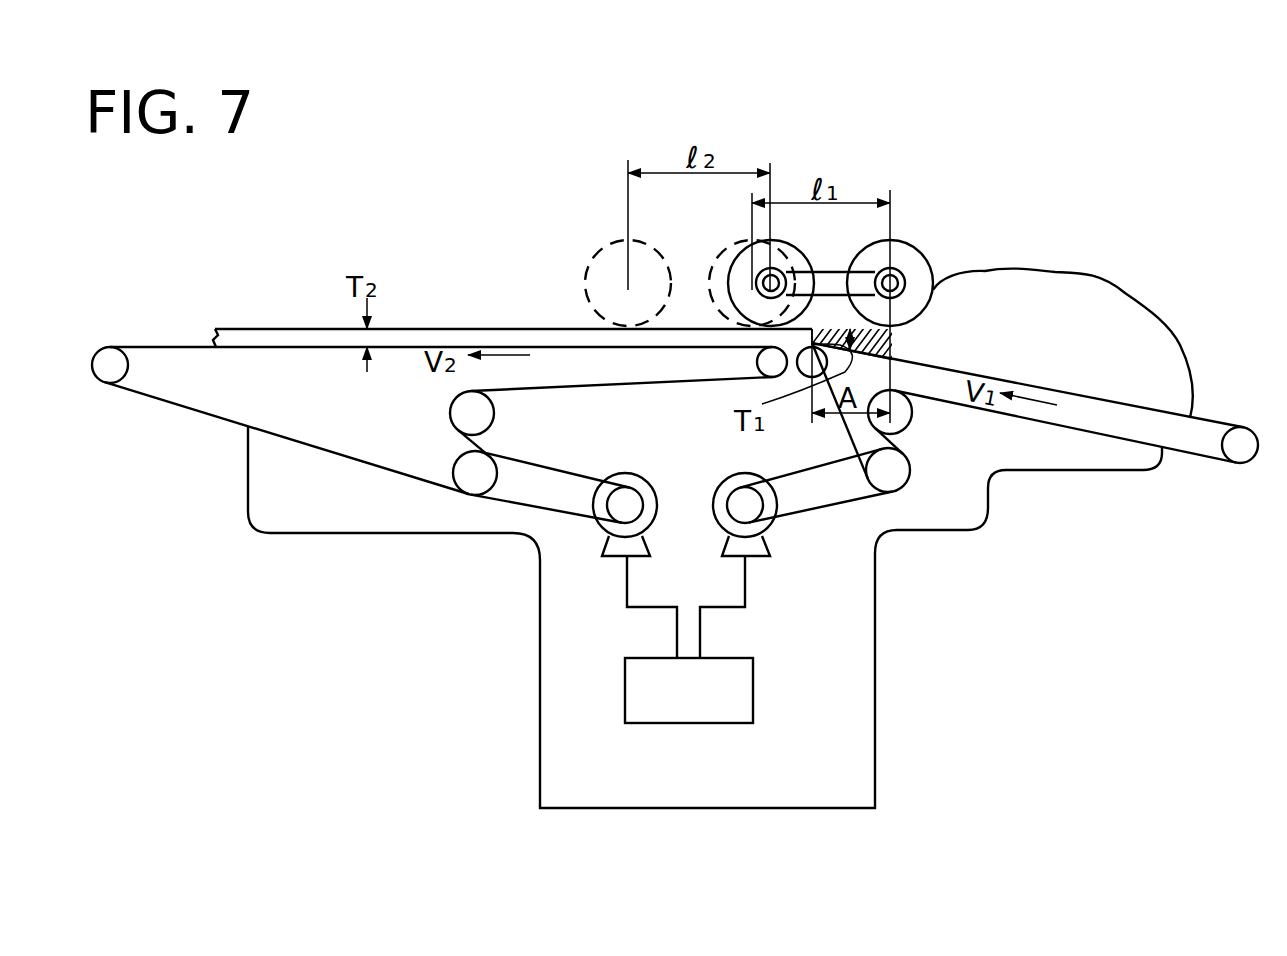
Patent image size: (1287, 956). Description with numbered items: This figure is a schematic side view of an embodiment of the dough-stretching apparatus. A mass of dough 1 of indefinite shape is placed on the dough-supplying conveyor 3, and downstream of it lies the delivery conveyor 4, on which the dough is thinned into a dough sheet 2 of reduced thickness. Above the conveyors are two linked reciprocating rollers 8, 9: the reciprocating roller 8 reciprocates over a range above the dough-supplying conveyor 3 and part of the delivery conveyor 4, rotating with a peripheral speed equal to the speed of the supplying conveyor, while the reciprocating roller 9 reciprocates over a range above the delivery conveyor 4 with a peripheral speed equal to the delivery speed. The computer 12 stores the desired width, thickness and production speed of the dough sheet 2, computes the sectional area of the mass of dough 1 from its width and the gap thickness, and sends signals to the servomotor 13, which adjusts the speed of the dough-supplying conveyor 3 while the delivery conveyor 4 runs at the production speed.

The mass of dough 1 is at (1073, 272).
The dough sheet 2 is at (242, 330).
The dough-supplying conveyor 3 is at (1200, 417).
The delivery conveyor 4 is at (127, 347).
The reciprocating roller 8 is at (921, 250).
The reciprocating roller 9 is at (800, 247).
The computer 12 is at (685, 724).
The servomotor 13 is at (760, 543).